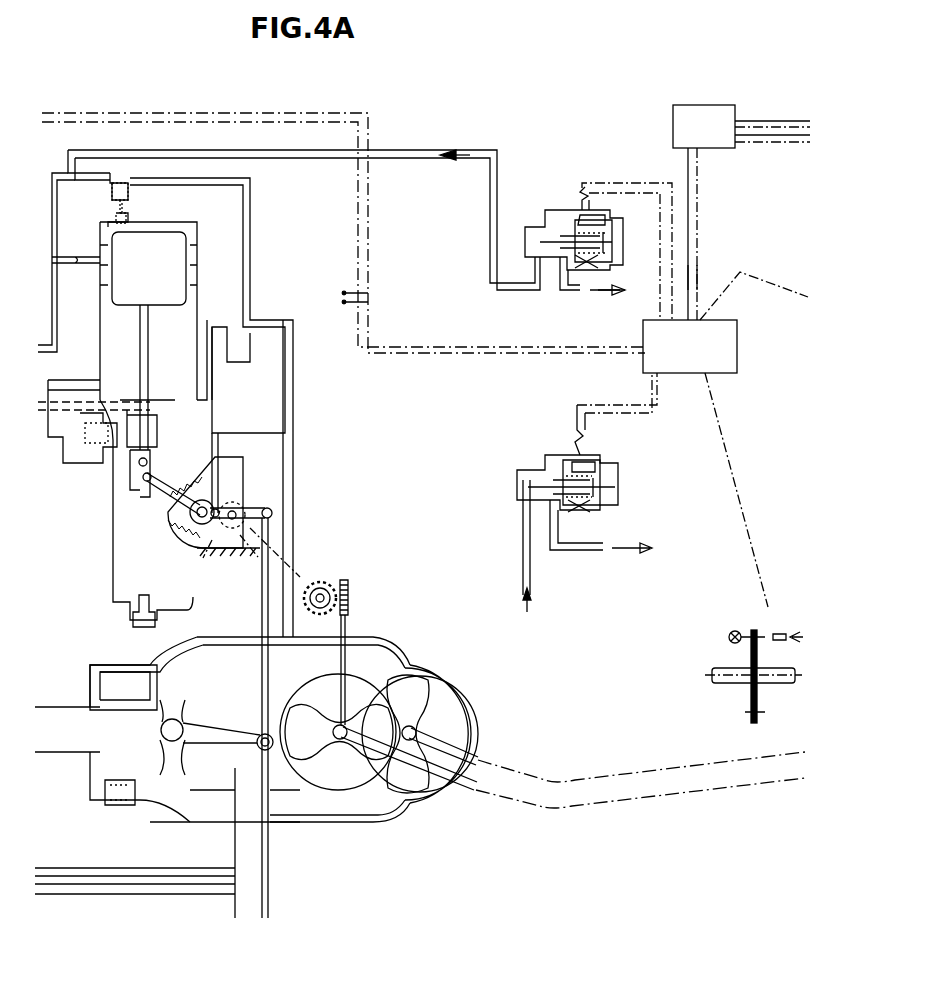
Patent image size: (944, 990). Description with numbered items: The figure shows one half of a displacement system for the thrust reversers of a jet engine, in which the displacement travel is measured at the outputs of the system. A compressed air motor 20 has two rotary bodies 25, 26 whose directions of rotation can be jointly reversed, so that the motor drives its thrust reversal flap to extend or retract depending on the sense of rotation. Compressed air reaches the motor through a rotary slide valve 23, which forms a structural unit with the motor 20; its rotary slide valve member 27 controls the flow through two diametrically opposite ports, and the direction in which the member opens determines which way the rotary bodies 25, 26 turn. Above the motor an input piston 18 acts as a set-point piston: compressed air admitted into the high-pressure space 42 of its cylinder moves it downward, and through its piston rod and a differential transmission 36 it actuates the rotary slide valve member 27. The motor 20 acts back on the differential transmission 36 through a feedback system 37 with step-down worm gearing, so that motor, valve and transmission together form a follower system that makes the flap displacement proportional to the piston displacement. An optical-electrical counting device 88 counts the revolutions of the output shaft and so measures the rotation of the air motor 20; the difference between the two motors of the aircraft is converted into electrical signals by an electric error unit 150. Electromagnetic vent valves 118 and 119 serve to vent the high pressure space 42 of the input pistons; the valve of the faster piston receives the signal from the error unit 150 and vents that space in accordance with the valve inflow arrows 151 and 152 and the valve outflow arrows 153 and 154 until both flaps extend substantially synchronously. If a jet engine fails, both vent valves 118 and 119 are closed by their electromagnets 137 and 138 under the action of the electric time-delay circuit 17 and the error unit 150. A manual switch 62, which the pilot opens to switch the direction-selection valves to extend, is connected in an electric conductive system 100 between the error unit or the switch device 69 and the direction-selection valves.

The electric time-delay circuit 17 is at (697, 279).
The input piston 18 is at (188, 270).
The compressed air motor 20 is at (253, 777).
The rotary slide valve 23 is at (123, 687).
The rotary body 25 is at (302, 748).
The rotary body 26 is at (418, 692).
The rotary slide valve member 27 is at (158, 768).
The differential transmission 36 is at (215, 505).
The feedback system 37 is at (296, 575).
The high-pressure space 42 is at (110, 218).
The manual switch 62 is at (342, 298).
The switch device 69 is at (692, 108).
The optical-electrical counting device 88 is at (754, 666).
The electric conductive system 100 is at (452, 350).
The electromagnetic vent valve 118 is at (540, 228).
The electromagnetic vent valve 119 is at (548, 470).
The electromagnet 137 is at (605, 215).
The electromagnet 138 is at (600, 506).
The electric error unit 150 is at (712, 358).
The valve inflow arrow 151 is at (434, 152).
The valve inflow arrow 152 is at (527, 612).
The valve outflow arrow 153 is at (598, 293).
The valve outflow arrow 154 is at (620, 552).